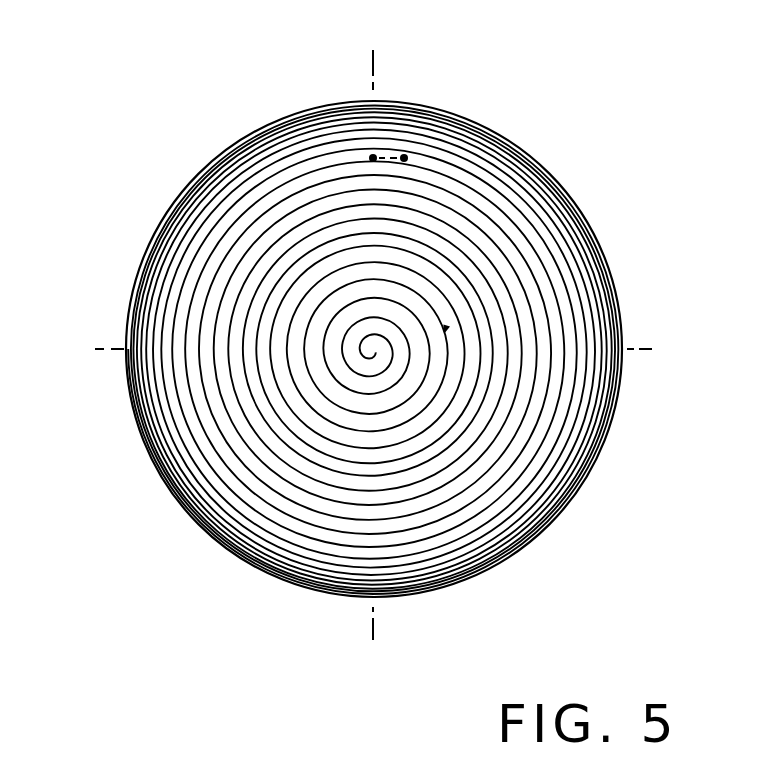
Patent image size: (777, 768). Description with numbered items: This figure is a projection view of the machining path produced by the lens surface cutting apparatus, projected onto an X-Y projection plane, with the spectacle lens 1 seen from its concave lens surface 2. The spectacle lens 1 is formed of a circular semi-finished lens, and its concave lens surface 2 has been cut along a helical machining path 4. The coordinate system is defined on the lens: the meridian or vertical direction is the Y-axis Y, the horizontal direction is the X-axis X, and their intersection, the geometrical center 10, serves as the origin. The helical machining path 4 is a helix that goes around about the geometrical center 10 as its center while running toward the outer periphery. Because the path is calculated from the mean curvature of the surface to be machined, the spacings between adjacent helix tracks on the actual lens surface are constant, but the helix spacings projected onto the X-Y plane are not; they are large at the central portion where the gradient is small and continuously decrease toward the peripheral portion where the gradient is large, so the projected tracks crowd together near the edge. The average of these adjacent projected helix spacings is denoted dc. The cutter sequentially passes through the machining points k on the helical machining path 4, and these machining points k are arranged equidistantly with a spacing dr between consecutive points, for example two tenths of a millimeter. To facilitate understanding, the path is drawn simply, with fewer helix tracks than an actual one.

The spectacle lens 1 is at (677, 198).
The concave lens surface 2 is at (285, 473).
The helical machining path 4 is at (543, 450).
The geometrical center 10 is at (396, 347).
The machining points k is at (404, 158).
The spacing between consecutive machining points dr is at (388, 157).
The average spacing of adjacent helix spacings dc is at (446, 330).
The X-axis X is at (372, 348).
The Y-axis Y is at (373, 346).